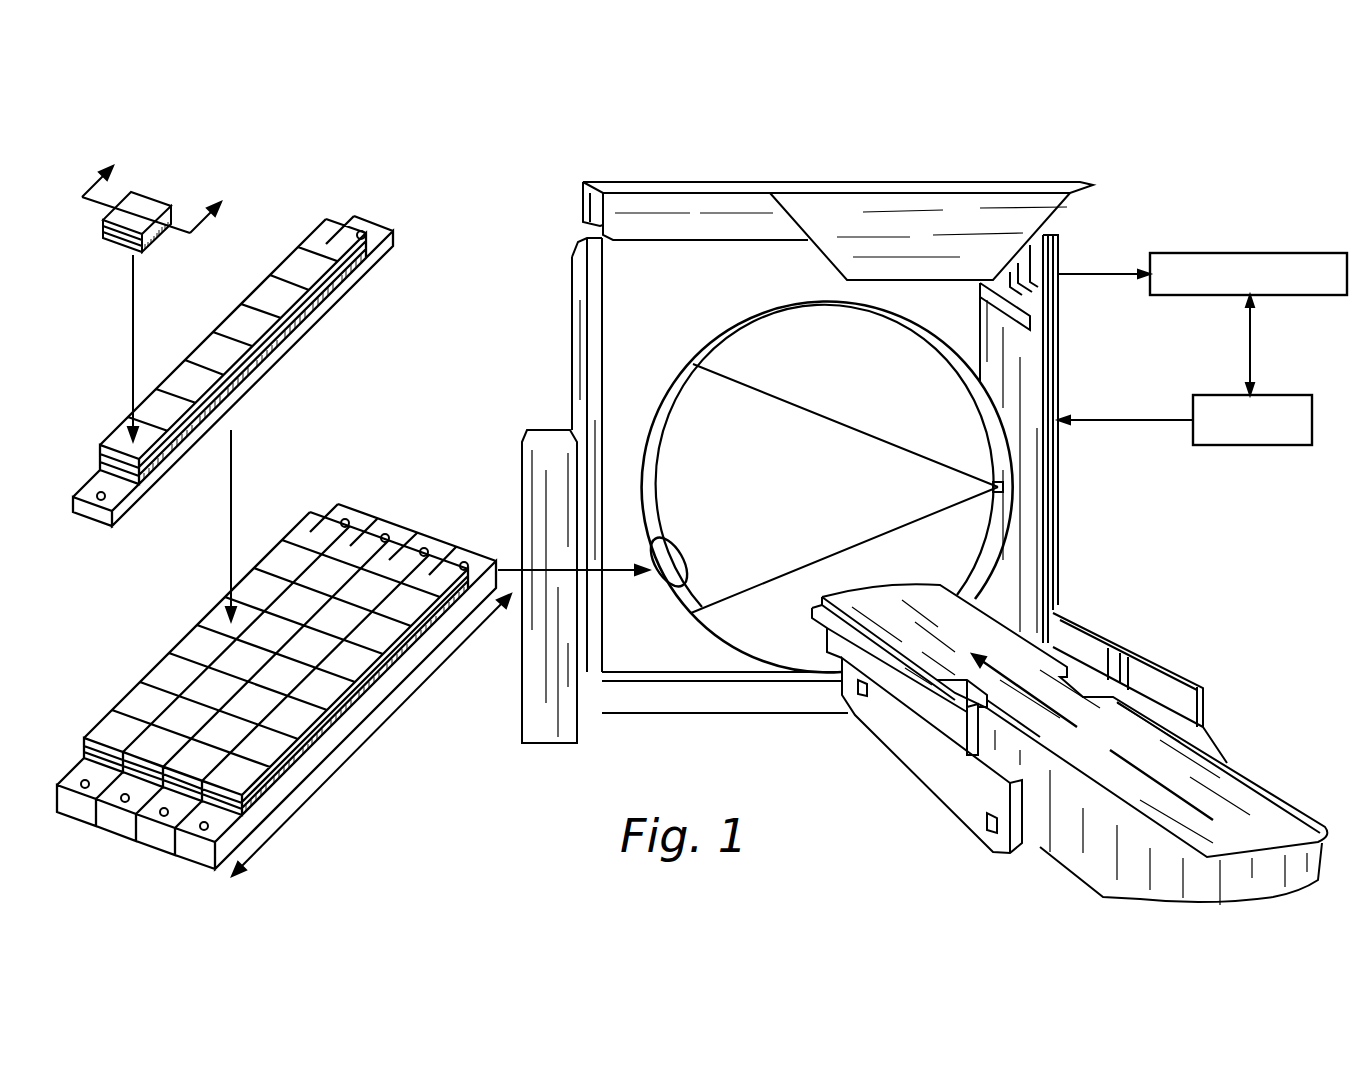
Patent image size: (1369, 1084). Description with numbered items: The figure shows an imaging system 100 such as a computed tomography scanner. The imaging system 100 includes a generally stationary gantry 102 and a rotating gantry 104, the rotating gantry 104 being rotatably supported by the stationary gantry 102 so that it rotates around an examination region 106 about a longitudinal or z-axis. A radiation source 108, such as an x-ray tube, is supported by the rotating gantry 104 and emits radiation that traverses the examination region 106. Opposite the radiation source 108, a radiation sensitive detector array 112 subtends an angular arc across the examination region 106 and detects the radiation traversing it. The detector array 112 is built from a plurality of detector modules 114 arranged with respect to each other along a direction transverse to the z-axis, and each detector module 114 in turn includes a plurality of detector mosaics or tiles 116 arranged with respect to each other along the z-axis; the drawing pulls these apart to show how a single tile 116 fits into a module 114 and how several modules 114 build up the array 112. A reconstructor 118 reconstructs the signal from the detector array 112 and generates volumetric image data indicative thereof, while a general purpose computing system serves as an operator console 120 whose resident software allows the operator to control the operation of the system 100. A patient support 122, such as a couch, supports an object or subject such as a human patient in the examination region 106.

The imaging system 100 is at (585, 145).
The stationary gantry 102 is at (572, 343).
The rotating gantry 104 is at (730, 333).
The examination region 106 is at (835, 494).
The radiation source 108 is at (1007, 487).
The radiation sensitive detector array 112 is at (660, 410).
The detector module 114 is at (386, 230).
The detector tile 116 is at (150, 200).
The reconstructor 118 is at (1253, 253).
The operator console 120 is at (1222, 395).
The patient support 122 is at (1267, 817).